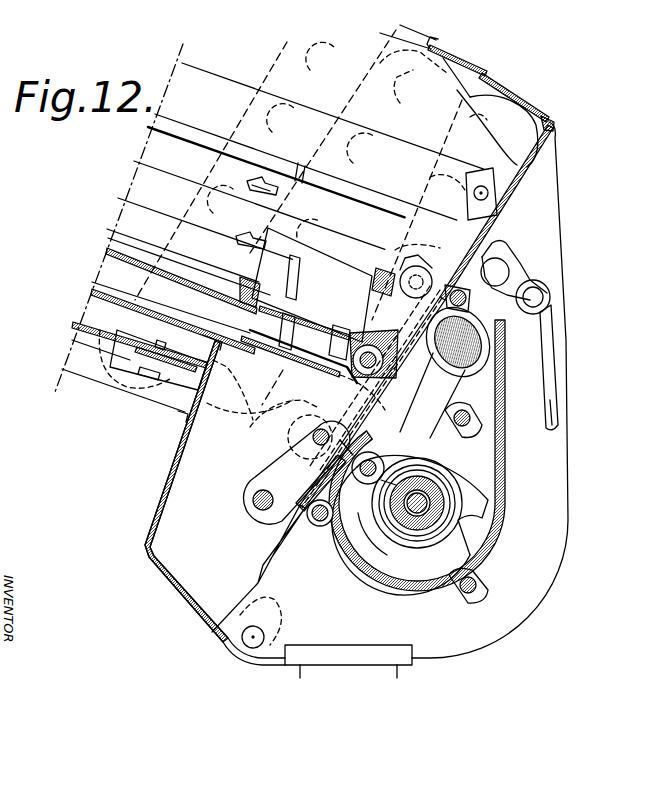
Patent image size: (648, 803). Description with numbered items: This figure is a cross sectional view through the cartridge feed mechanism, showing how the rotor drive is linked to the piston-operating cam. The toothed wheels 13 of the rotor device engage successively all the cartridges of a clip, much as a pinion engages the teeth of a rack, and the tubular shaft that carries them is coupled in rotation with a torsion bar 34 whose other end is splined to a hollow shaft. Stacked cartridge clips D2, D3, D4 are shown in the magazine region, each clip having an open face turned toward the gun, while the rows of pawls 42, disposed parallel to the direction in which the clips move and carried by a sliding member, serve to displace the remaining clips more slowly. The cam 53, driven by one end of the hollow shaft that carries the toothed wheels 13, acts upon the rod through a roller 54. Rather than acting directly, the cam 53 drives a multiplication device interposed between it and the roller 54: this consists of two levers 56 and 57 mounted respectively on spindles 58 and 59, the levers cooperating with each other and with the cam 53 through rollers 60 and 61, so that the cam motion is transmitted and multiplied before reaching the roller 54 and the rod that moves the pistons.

The roller 54 is at (412, 272).
The pawls 42 is at (319, 305).
The spindle 58 is at (467, 340).
The lever 56 is at (430, 384).
The roller 61 is at (335, 427).
The roller 60 is at (379, 465).
The torsion bar 34 is at (420, 503).
The spindle 59 is at (254, 501).
The lever 57 is at (283, 488).
The cam 53 is at (373, 527).
The toothed wheels 13 is at (401, 517).
The saddle D4 is at (110, 385).
The frame bracket D3 is at (182, 418).
The cartridge clip D2 is at (252, 432).